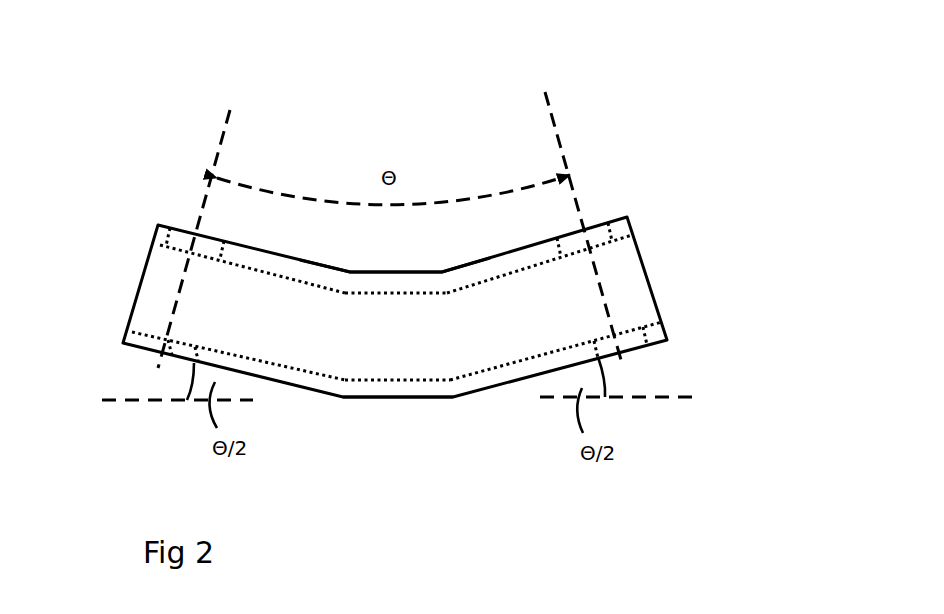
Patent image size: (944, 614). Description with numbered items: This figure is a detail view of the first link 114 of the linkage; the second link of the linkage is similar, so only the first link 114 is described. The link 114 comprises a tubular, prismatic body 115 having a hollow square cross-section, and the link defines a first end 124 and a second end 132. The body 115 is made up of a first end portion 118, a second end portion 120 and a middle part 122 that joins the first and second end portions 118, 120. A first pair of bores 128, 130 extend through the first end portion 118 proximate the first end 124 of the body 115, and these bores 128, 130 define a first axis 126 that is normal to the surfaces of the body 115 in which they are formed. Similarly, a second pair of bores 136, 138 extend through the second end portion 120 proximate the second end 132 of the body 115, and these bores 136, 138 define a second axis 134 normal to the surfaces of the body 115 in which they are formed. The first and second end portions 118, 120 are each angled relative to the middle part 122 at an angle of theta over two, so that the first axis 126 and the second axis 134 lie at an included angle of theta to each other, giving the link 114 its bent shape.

The first link 114 is at (673, 113).
The tubular, prismatic body 115 is at (418, 391).
The first end portion 118 is at (568, 324).
The second end portion 120 is at (274, 326).
The middle part 122 is at (411, 354).
The first end 124 is at (602, 200).
The first axis 126 is at (560, 140).
The bore 128 is at (598, 237).
The bore 130 is at (623, 332).
The second end 132 is at (190, 196).
The second axis 134 is at (223, 148).
The bore 136 is at (182, 248).
The bore 138 is at (157, 340).